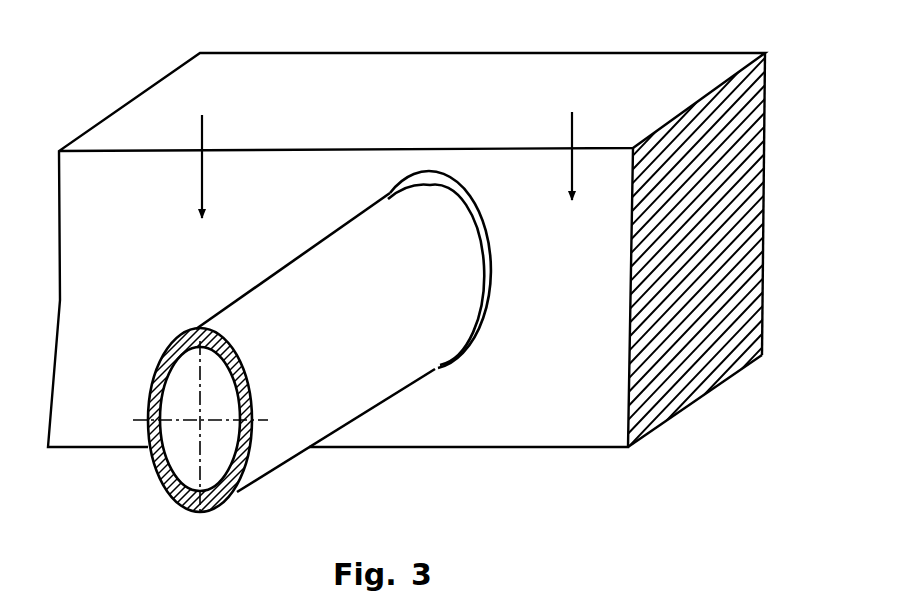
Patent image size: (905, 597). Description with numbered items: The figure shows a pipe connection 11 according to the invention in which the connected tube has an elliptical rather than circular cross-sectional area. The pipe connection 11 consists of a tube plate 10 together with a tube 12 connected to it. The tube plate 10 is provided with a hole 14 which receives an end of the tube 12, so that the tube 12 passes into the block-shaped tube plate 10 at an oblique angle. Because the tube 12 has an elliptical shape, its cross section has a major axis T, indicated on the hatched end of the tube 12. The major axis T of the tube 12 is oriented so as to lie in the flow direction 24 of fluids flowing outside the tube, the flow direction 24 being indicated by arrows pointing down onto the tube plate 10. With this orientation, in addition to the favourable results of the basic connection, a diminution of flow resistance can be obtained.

The tube plate 10 is at (640, 83).
The pipe connection 11 is at (128, 91).
The tube 12 is at (462, 287).
The hole 14 is at (468, 340).
The flow direction 24 is at (205, 132).
The major axis T is at (203, 378).